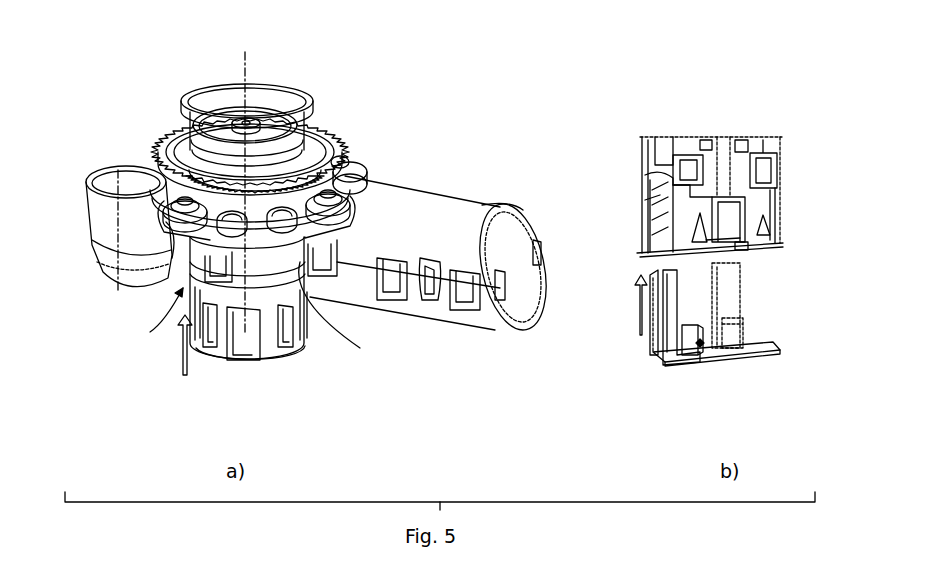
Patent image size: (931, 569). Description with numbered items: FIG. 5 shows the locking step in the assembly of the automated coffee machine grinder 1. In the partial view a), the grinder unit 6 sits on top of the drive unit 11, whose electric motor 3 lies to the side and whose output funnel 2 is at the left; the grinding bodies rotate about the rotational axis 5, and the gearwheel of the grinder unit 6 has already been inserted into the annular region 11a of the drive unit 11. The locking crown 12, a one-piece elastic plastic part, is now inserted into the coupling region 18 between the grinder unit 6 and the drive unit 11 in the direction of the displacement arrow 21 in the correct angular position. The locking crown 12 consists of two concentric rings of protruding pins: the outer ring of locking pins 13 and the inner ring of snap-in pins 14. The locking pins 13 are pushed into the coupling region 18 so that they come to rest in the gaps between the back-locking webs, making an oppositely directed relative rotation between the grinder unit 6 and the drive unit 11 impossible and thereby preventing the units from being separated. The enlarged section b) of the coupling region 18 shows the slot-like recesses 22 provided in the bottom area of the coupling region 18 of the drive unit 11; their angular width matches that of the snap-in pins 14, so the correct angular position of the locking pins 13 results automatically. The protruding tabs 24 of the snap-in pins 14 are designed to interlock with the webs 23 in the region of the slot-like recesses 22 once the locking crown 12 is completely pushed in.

The automated coffee machine grinder 1 is at (144, 48).
The output funnel 2 is at (113, 167).
The electric motor 3 is at (494, 212).
The rotational axis 5 is at (247, 52).
The grinder unit 6 is at (337, 129).
The drive unit 11 is at (440, 192).
The annular region 11a is at (655, 203).
The locking crown 12 is at (245, 378).
The locking pins 13 is at (286, 352).
The snap-in pins 14 is at (742, 336).
The coupling region 18 is at (800, 110).
The displacement arrow 21 is at (176, 356).
The slot-like recesses 22 is at (756, 231).
The webs 23 is at (748, 249).
The protruding tabs 24 is at (704, 344).